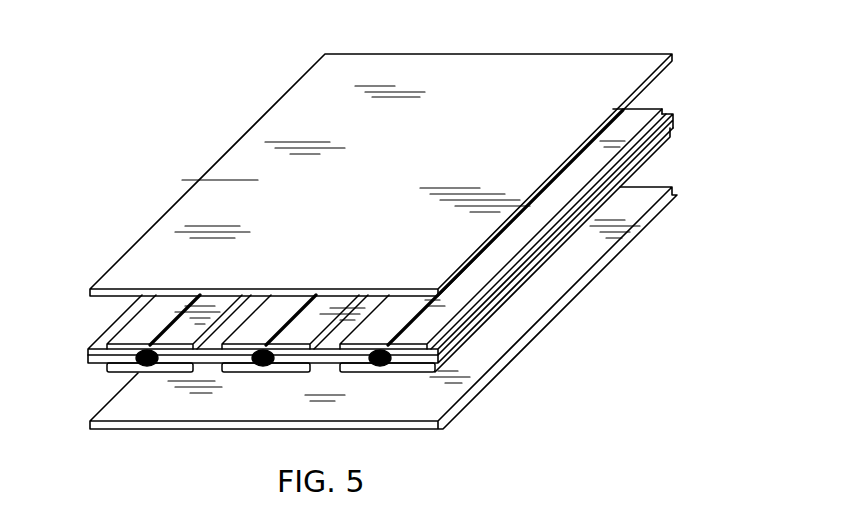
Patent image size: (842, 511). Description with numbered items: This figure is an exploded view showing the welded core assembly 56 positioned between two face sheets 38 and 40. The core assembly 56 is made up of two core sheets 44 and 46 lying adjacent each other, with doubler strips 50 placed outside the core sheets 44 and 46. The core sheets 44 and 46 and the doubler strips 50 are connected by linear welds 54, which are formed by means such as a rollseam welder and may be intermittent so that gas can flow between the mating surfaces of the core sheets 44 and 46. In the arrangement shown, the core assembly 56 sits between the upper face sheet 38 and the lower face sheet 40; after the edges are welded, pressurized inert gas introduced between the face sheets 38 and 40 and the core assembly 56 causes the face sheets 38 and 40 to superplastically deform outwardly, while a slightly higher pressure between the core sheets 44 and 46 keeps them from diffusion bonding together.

The face sheet 38 is at (577, 63).
The face sheet 40 is at (673, 188).
The core sheet 44 is at (88, 352).
The core sheet 46 is at (88, 363).
The doubler strip 50 is at (125, 328).
The linear weld 54 is at (149, 368).
The core assembly 56 is at (673, 119).